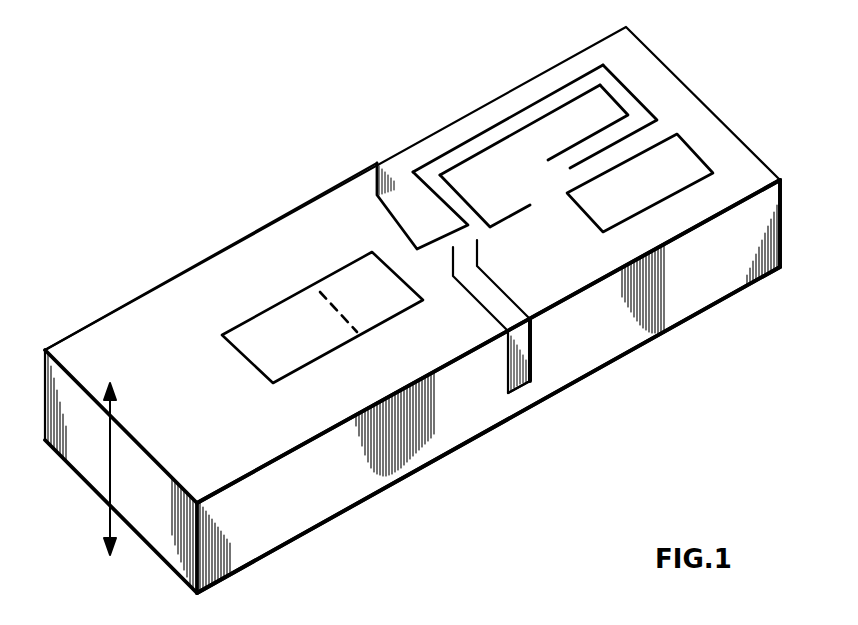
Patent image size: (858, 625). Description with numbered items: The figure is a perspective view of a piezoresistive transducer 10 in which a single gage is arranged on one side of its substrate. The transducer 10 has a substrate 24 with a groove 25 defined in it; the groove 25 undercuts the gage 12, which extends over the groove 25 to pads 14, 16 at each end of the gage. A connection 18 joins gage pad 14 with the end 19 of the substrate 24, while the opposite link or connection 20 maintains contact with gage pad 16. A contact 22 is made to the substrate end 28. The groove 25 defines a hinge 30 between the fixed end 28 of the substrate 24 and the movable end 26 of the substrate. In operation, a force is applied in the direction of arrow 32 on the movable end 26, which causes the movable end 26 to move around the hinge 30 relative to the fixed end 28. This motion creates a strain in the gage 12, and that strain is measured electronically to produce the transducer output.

The piezoresistive transducer 10 is at (480, 78).
The gage 12 is at (502, 285).
The gage pad 14 is at (327, 257).
The gage pad 16 is at (461, 153).
The connection 18 is at (300, 325).
The end of substrate 19 is at (113, 338).
The link or connection 20 is at (568, 118).
The contact 22 is at (680, 168).
The substrate 24 is at (470, 418).
The groove 25 is at (530, 357).
The movable end 26 is at (262, 542).
The fixed end 28 is at (722, 262).
The hinge 30 is at (524, 396).
The arrow 32 is at (110, 478).